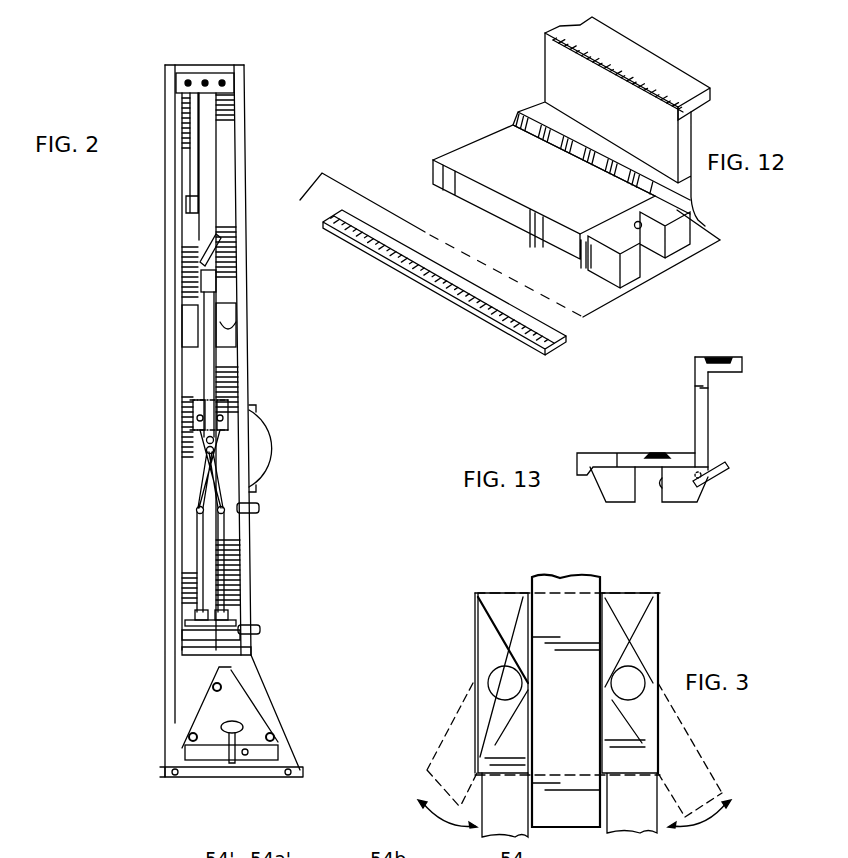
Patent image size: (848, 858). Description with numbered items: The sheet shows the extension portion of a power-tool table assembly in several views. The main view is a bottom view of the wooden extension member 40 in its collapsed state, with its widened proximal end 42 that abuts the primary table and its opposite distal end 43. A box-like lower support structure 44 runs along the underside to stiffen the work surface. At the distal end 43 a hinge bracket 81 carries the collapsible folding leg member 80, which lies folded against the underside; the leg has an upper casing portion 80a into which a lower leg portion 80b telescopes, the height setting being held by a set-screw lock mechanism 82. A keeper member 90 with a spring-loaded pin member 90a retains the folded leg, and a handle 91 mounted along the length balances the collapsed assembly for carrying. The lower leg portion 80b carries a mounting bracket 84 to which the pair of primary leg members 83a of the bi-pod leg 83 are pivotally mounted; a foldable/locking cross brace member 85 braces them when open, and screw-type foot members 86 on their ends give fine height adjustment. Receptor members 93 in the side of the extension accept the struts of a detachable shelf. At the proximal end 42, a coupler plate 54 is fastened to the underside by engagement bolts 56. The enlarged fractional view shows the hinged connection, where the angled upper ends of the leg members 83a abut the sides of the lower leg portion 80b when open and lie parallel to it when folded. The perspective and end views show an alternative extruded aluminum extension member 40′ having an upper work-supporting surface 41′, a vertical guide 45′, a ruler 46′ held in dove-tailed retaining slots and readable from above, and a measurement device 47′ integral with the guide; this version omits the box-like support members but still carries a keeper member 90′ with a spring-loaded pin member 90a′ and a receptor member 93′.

In FIG. 2, the elongate extension member 40 is at (249, 128).
In FIG. 2, the distal end 43 is at (211, 60).
In FIG. 2, the hinge bracket 81 is at (197, 77).
In FIG. 2, the upper casing portion 80a is at (205, 174).
In FIG. 2, the lock mechanism 82 is at (214, 250).
In FIG. 2, the collapsible folding leg member 80 is at (203, 284).
In FIG. 2, the lower leg portion 80b is at (208, 316).
In FIG. 3, the lower leg portion 80b is at (578, 602).
In FIG. 2, the keeper member 90 is at (187, 336).
In FIG. 2, the spring-loaded pin member 90a is at (230, 330).
In FIG. 13, the spring-loaded pin member 90a is at (657, 488).
In FIG. 2, the box-like lower support structure 44 is at (245, 394).
In FIG. 2, the handle 91 is at (270, 443).
In FIG. 2, the foldable/locking cross brace member 85 is at (205, 474).
In FIG. 2, the bi-pod leg 83 is at (202, 538).
In FIG. 2, the primary leg members 83a is at (221, 553).
In FIG. 3, the primary leg members 83a is at (490, 644).
In FIG. 2, the screw-type foot members 86 is at (235, 616).
In FIG. 2, the receptor members 93 is at (257, 508).
In FIG. 2, the coupler plate 54 is at (253, 706).
In FIG. 2, the engagement bolts 56 is at (213, 687).
In FIG. 2, the proximal end 42 is at (247, 766).
In FIG. 3, the mounting bracket 84 is at (510, 598).
In FIG. 12, the extension member 40′ is at (493, 143).
In FIG. 13, the extension member 40′ is at (712, 438).
In FIG. 12, the upper work-supporting surface 41′ is at (472, 150).
In FIG. 13, the upper work-supporting surface 41′ is at (603, 452).
In FIG. 12, the vertical guide 45′ is at (553, 70).
In FIG. 13, the vertical guide 45′ is at (710, 409).
In FIG. 12, the ruler 46′ is at (420, 279).
In FIG. 13, the ruler 46′ is at (657, 448).
In FIG. 12, the measurement device 47′ is at (678, 88).
In FIG. 13, the measurement device 47′ is at (716, 357).
In FIG. 12, the keeper member 90′ is at (670, 218).
In FIG. 13, the keeper member 90′ is at (617, 490).
In FIG. 12, the spring-loaded pin member 90a′ is at (638, 229).
In FIG. 13, the receptor member 93′ is at (720, 471).